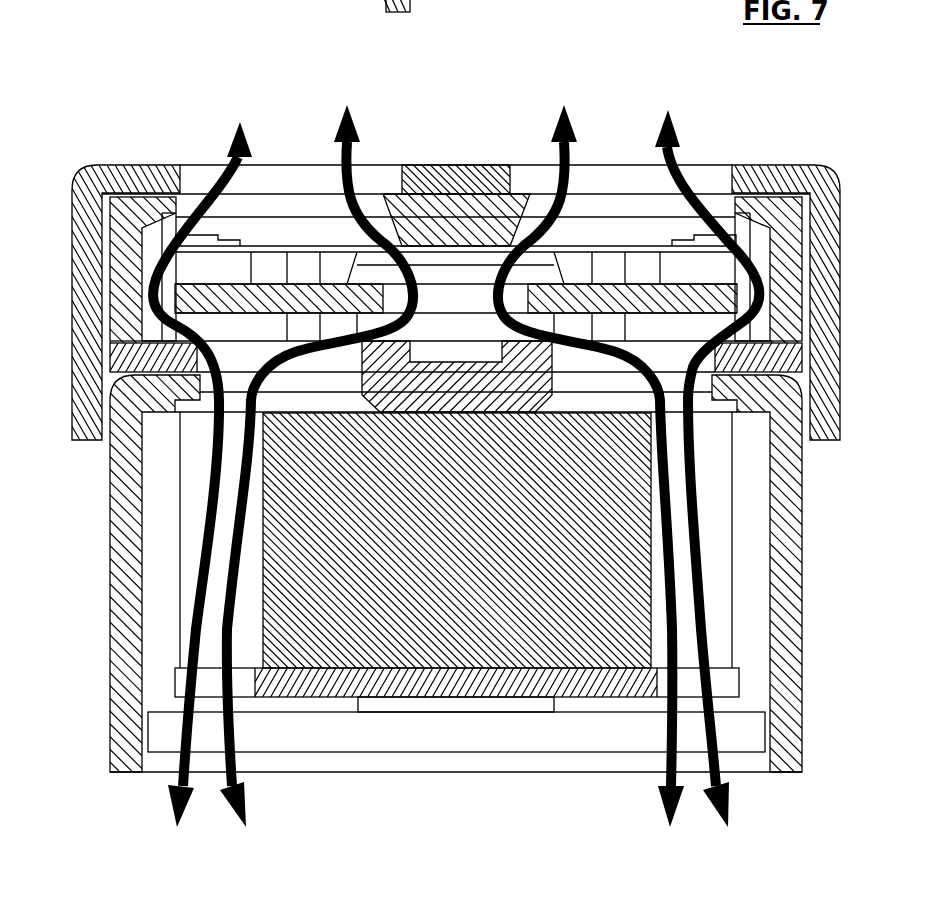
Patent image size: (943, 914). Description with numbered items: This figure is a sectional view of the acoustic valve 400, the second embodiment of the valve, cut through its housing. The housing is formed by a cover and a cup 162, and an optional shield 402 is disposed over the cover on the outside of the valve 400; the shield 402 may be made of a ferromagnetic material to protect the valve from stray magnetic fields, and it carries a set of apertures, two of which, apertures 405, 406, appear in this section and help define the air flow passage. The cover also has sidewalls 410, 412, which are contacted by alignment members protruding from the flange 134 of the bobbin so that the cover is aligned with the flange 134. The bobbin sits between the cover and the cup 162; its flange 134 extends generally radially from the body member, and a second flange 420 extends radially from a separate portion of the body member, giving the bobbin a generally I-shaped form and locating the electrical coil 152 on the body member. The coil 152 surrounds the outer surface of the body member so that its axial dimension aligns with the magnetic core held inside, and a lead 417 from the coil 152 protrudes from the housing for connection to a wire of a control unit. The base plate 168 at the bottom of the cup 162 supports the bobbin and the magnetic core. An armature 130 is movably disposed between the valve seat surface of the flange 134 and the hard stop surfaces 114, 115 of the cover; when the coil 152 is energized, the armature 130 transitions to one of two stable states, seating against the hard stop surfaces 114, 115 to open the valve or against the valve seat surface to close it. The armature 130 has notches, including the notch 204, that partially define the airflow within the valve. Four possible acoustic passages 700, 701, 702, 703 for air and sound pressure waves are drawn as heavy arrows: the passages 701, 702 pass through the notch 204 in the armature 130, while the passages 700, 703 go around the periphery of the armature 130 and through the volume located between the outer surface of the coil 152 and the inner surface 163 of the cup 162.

The acoustic valve 400 is at (859, 88).
The shield 402 is at (833, 220).
The aperture 405 is at (602, 170).
The aperture 406 is at (301, 170).
The sidewall 410 is at (797, 304).
The sidewall 412 is at (122, 243).
The lead 417 is at (385, 6).
The hard stop surface 114 is at (217, 283).
The hard stop surface 115 is at (690, 278).
The armature 130 is at (751, 323).
The flange 134 is at (800, 362).
The electrical coil 152 is at (488, 646).
The cup 162 is at (793, 637).
The inner surface 163 is at (135, 650).
The base plate 168 is at (438, 739).
The notch 204 is at (450, 324).
The second flange 420 is at (404, 686).
The acoustic passage 700 is at (230, 148).
The acoustic passage 701 is at (352, 133).
The acoustic passage 702 is at (548, 132).
The acoustic passage 703 is at (678, 135).